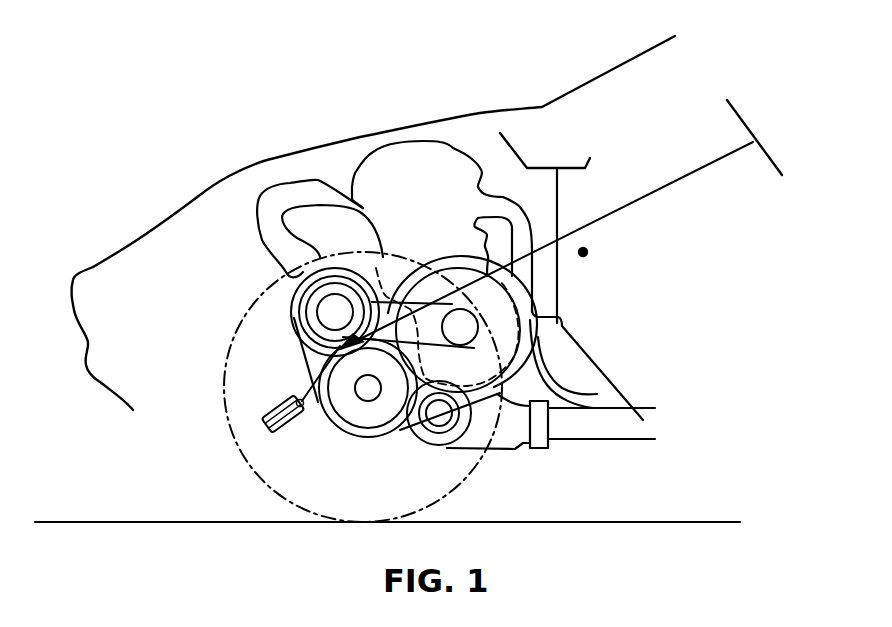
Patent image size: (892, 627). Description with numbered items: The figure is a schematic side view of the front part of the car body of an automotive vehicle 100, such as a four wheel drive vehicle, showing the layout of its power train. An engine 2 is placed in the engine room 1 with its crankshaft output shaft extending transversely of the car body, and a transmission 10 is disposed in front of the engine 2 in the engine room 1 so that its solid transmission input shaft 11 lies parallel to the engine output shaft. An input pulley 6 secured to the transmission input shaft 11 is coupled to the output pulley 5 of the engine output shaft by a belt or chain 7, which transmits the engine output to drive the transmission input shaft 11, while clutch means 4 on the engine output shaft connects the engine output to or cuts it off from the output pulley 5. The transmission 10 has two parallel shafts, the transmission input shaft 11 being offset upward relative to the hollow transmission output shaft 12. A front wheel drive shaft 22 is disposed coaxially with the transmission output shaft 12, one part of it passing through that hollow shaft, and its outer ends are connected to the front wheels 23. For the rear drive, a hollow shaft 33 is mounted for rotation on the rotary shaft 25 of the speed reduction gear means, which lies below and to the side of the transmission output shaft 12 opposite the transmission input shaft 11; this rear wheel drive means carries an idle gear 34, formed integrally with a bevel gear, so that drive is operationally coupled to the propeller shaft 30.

The automotive vehicle 100 is at (232, 178).
The engine room 1 is at (185, 293).
The engine 2 is at (440, 140).
The clutch means 4 is at (560, 320).
The output pulley 5 is at (462, 336).
The input pulley 6 is at (337, 310).
The belt or chain 7 is at (446, 268).
The transmission 10 is at (292, 353).
The transmission input shaft 11 is at (292, 311).
The transmission output shaft 12 is at (328, 420).
The front wheel drive shaft 22 is at (368, 398).
The front wheels 23 is at (228, 428).
The rotary shaft 25 is at (417, 445).
The propeller shaft 30 is at (597, 440).
The hollow shaft 33 is at (442, 445).
The idle gear 34 is at (473, 445).